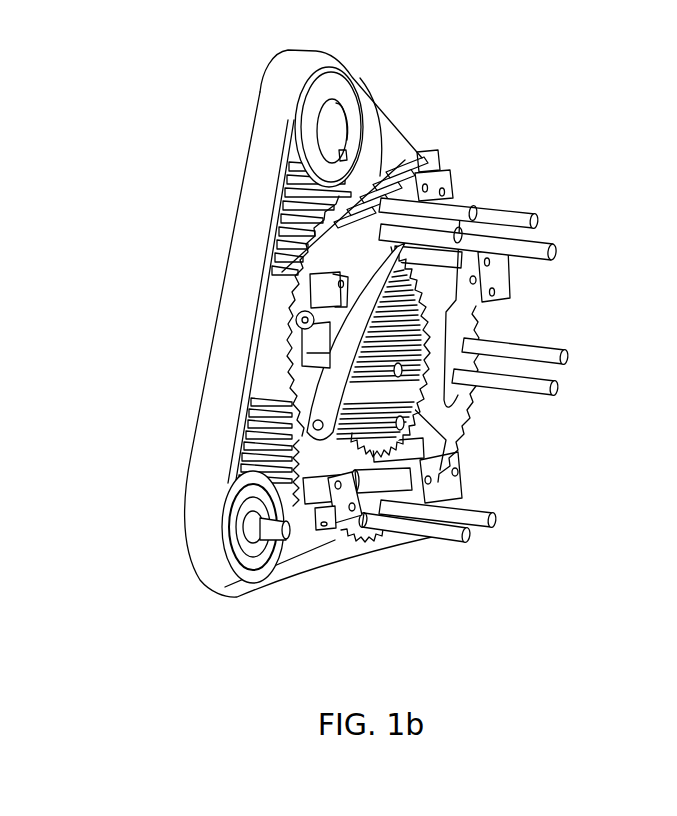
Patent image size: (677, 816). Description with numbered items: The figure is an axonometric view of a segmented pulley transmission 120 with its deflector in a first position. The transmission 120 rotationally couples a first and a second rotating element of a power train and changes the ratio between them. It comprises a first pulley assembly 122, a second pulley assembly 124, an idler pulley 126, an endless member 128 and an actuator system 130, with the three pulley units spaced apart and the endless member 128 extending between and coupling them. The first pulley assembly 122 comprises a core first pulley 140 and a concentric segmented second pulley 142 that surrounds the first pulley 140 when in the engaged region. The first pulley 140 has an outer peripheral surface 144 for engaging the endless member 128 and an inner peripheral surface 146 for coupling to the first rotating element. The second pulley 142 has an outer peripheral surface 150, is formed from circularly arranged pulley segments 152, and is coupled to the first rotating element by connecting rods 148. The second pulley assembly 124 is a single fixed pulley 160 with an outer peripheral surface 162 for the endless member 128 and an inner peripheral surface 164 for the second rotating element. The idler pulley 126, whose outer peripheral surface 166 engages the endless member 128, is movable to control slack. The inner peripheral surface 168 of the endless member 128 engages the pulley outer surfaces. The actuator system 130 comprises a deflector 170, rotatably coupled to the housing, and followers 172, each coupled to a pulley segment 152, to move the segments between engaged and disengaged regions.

The segmented pulley transmission 120 is at (129, 128).
The first pulley assembly 122 is at (459, 358).
The second pulley assembly 124 is at (357, 106).
The idler pulley 126 is at (206, 490).
The endless member 128 is at (291, 302).
The actuator system 130 is at (241, 341).
The first pulley 140 is at (400, 400).
The second pulley 142 is at (433, 432).
The outer peripheral surface 144 is at (468, 394).
The inner peripheral surface 146 is at (412, 332).
The connecting rods 148 is at (537, 245).
The outer peripheral surface 150 is at (298, 236).
The pulley segments 152 is at (322, 255).
The fixed pulley 160 is at (306, 150).
The outer peripheral surface 162 is at (298, 177).
The inner peripheral surface 164 is at (335, 123).
The outer peripheral surface 166 is at (245, 477).
The inner peripheral surface 168 is at (372, 136).
The deflector 170 is at (324, 384).
The followers 172 is at (321, 290).